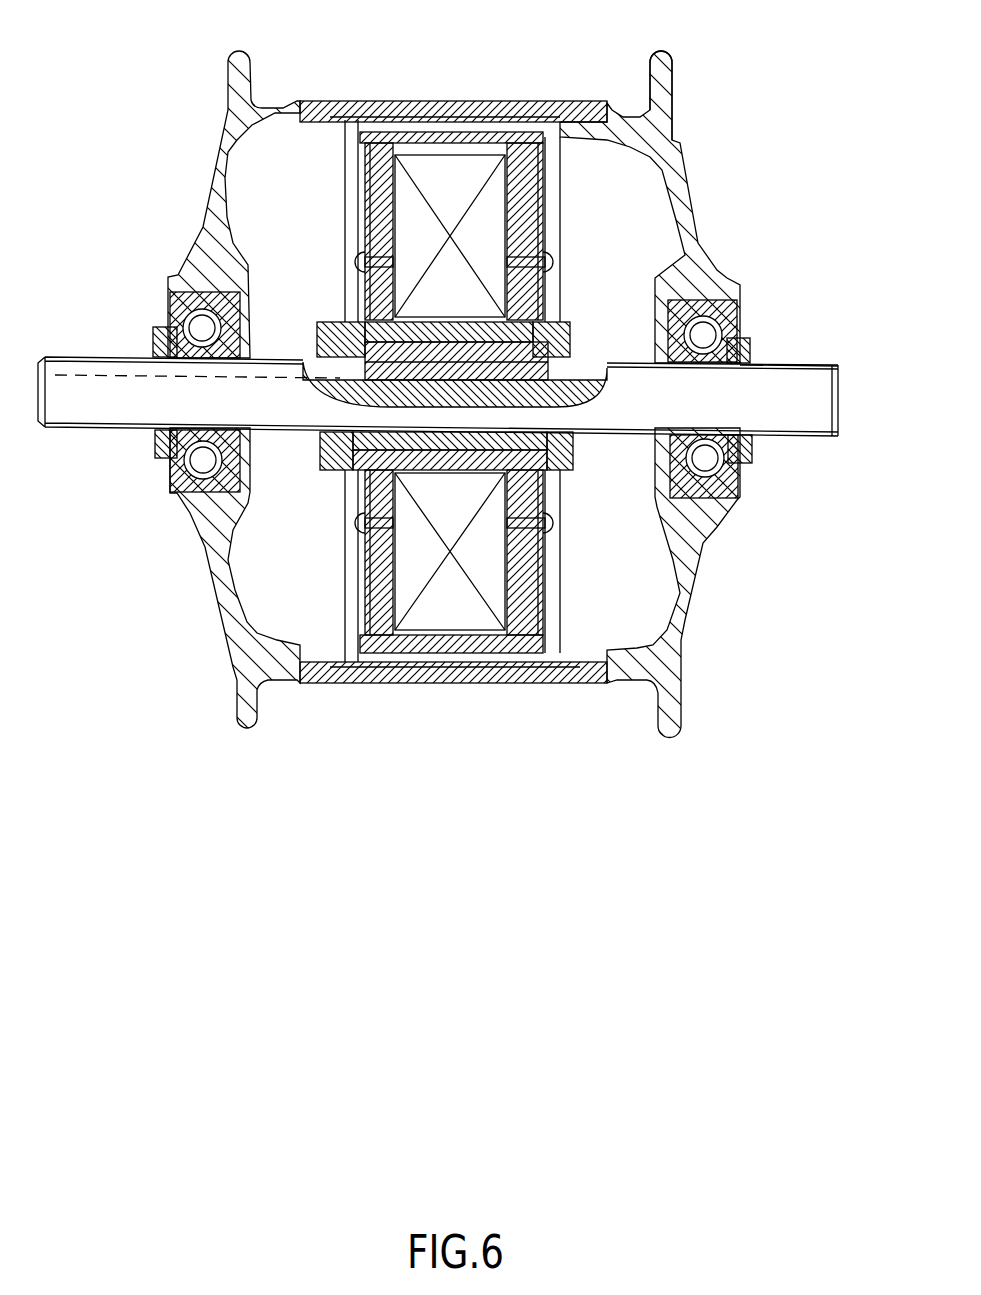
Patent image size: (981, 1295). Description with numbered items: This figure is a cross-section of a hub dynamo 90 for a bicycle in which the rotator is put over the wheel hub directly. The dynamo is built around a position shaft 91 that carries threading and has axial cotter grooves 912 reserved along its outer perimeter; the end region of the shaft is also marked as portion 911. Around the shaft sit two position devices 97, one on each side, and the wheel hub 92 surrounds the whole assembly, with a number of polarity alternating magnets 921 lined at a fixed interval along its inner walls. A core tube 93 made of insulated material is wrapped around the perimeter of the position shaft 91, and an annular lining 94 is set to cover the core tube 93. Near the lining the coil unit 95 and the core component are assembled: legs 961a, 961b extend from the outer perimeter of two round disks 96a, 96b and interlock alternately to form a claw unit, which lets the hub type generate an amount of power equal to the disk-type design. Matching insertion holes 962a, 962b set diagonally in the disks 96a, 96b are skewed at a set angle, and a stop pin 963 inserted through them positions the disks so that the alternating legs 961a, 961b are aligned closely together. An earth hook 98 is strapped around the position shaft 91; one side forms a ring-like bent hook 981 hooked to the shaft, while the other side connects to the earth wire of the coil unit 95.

The hub dynamo 90 is at (683, 157).
The position shaft 91 is at (840, 378).
The shaft end portion 911 is at (772, 360).
The axial cotter grooves 912 is at (97, 373).
The wheel hub 92 is at (663, 85).
The polarity alternating magnets 921 is at (470, 102).
The core tube 93 is at (533, 317).
The annular lining 94 is at (360, 493).
The coil unit 95 is at (477, 163).
The round disk 96a is at (357, 683).
The round disk 96b is at (392, 683).
The legs 961a is at (490, 667).
The legs 961b is at (474, 712).
The insertion holes 962a is at (357, 192).
The insertion holes 962b is at (326, 106).
The stop pin 963 is at (350, 250).
The position devices 97 is at (578, 449).
The earth hook 98 is at (347, 303).
The ring-like bent hook 981 is at (360, 578).